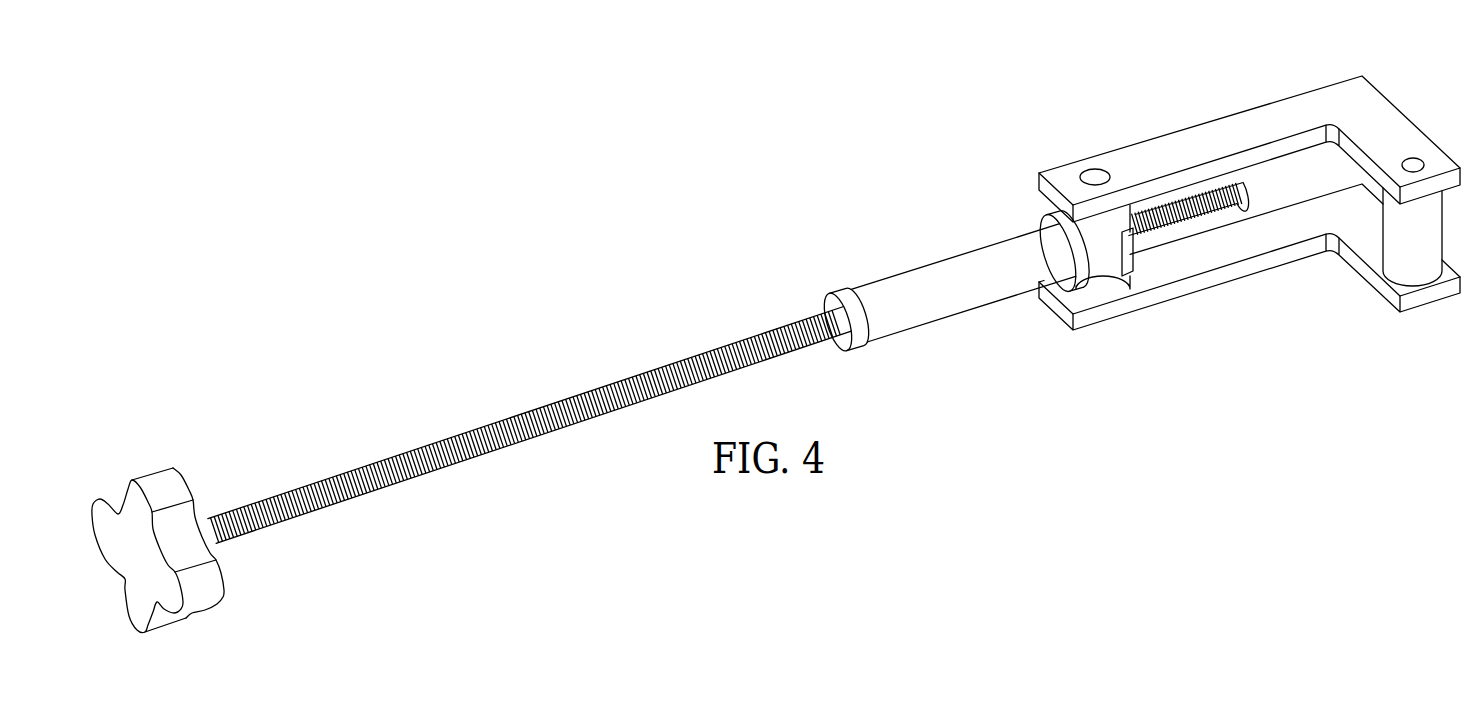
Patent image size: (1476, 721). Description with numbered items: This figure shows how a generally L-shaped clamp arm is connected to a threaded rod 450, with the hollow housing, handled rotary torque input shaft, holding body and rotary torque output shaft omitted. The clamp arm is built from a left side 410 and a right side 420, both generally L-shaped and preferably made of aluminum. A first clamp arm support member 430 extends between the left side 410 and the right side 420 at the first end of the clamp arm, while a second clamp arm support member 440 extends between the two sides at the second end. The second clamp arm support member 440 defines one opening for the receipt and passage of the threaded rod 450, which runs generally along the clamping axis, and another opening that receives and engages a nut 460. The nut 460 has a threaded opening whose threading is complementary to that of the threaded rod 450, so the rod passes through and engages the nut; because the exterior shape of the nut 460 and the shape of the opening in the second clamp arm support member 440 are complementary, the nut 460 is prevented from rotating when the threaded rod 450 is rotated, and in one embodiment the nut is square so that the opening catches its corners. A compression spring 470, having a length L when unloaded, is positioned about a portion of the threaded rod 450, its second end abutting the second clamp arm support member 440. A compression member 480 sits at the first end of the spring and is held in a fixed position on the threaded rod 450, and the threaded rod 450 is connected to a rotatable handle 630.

The left side 410 is at (1256, 272).
The right side 420 is at (1353, 76).
The first clamp arm support member 430 is at (1400, 270).
The second clamp arm support member 440 is at (1103, 287).
The threaded rod 450 is at (521, 412).
The nut 460 is at (1136, 260).
The compression spring 470 is at (955, 313).
The compression member 480 is at (836, 293).
The rotatable handle 630 is at (147, 468).